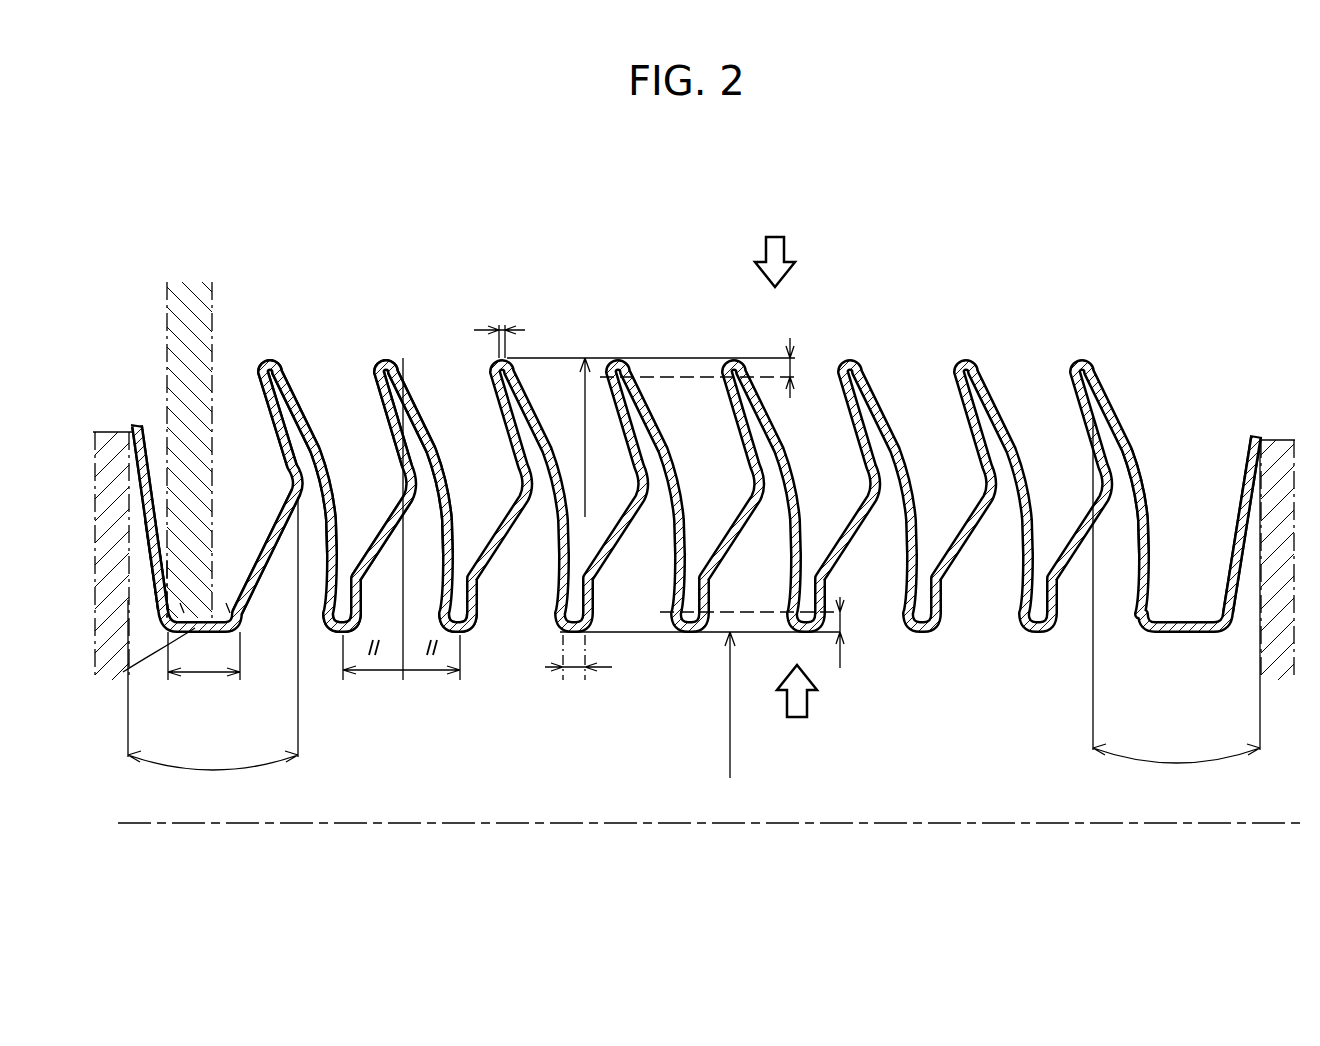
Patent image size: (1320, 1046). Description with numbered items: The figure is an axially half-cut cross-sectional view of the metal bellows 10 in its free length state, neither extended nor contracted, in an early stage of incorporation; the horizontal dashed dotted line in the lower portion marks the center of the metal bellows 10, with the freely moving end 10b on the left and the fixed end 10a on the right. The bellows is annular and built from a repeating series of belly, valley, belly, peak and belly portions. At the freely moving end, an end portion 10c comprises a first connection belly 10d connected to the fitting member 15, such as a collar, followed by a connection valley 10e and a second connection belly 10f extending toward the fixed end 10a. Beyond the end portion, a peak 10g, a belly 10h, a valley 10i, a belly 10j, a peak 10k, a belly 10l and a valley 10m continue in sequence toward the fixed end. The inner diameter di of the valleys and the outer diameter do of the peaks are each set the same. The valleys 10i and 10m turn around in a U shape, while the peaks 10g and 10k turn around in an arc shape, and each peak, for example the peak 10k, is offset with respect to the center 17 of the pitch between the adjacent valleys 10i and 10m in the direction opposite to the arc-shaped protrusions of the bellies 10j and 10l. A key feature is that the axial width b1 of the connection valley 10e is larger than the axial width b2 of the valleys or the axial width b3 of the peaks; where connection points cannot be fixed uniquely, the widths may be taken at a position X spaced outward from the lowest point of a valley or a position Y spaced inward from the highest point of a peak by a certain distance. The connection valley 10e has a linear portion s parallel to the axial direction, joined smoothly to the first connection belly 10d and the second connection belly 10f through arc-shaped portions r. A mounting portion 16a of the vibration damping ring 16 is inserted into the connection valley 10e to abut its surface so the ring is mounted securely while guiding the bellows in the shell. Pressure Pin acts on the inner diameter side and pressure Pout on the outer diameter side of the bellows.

The metal bellows 10 is at (922, 306).
The fixed end 10a is at (1248, 436).
The freely moving end 10b is at (135, 424).
The end portion 10c is at (694, 615).
The first connection belly 10d is at (152, 445).
The connection valley 10e is at (202, 619).
The second connection belly 10f is at (275, 458).
The peak 10g is at (277, 358).
The belly 10h is at (306, 438).
The valley 10i is at (343, 620).
The belly 10j is at (407, 480).
The peak 10k is at (388, 360).
The belly 10l is at (436, 467).
The valley 10m is at (460, 602).
The fitting member 15 is at (85, 465).
The vibration damping ring 16 is at (175, 292).
The mounting portion 16a is at (193, 547).
The center of the pitch 17 is at (403, 682).
The axial width of the connection valley b1 is at (204, 671).
The axial width of the valleys b2 is at (578, 674).
The axial width of the peaks b3 is at (499, 323).
The outer diameter of peaks do is at (651, 437).
The inner diameter of valleys di is at (700, 708).
The position X is at (755, 612).
The position Y is at (687, 378).
The linear portion s is at (147, 675).
The arc-shaped portion r is at (201, 594).
The pressure Pout is at (795, 242).
The pressure Pin is at (800, 714).